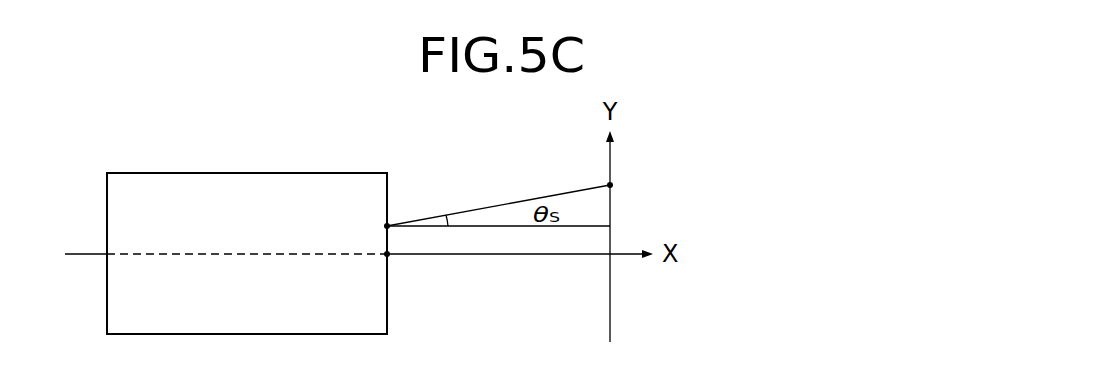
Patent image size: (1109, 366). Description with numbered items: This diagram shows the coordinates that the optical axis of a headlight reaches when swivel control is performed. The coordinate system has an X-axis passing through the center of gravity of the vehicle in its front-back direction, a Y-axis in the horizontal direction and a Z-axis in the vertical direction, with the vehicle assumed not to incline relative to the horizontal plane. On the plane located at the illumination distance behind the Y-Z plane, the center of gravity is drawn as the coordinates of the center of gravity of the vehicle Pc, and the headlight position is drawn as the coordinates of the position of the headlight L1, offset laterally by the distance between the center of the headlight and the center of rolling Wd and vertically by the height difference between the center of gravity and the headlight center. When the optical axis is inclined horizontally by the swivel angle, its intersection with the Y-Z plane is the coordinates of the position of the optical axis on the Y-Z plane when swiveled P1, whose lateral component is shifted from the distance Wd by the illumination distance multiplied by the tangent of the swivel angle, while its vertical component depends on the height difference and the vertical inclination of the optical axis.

The coordinates of the position of the headlight L1 is at (498, 197).
The coordinates of the position of the optical axis on the Y-Z plane when swiveled P1 is at (770, 189).
The coordinates of the center of gravity of the vehicle Pc is at (478, 271).
The distance between the center of the headlight and the center of rolling Wd is at (371, 238).